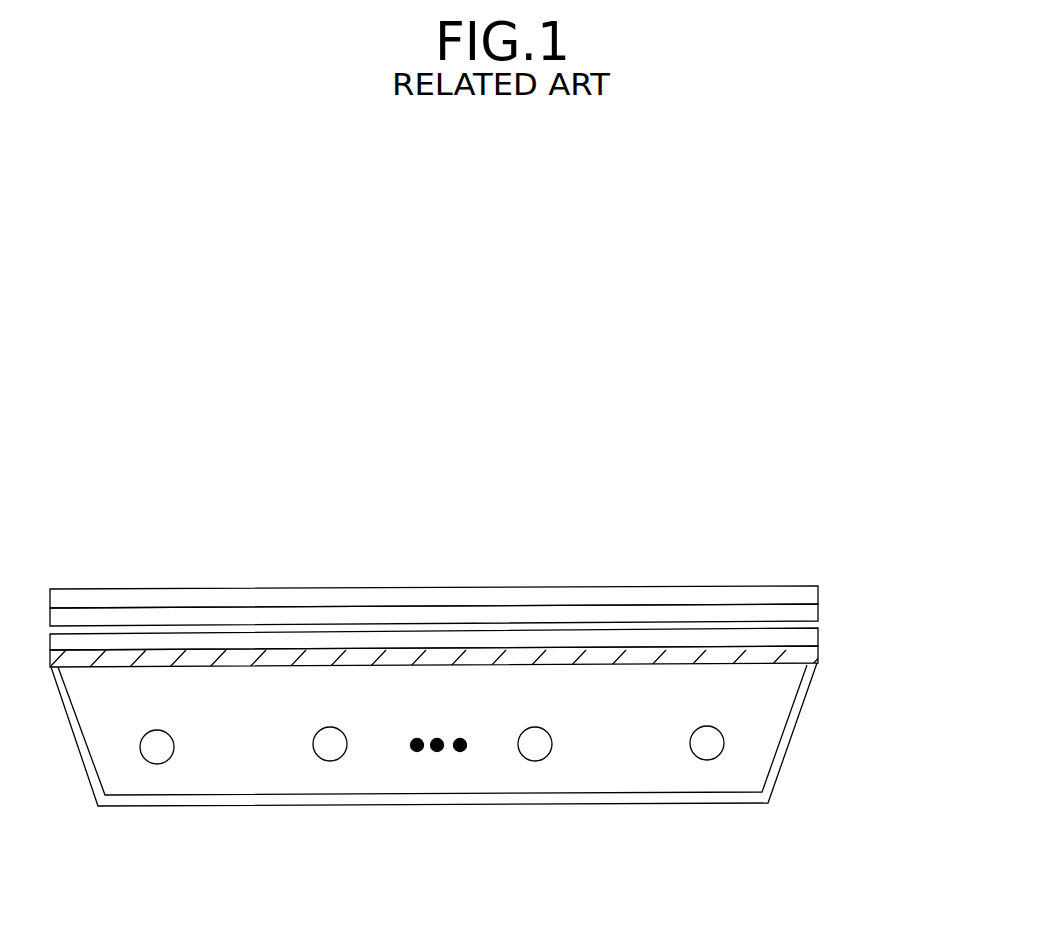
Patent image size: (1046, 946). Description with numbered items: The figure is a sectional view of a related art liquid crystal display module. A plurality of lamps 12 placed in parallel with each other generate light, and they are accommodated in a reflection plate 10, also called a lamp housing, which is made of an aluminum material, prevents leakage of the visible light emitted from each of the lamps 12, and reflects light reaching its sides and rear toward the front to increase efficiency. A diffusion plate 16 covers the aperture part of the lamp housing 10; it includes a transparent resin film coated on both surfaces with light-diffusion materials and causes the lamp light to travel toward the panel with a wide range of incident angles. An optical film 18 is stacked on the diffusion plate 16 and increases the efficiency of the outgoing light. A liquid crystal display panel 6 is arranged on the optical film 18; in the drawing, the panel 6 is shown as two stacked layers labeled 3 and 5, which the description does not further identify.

The upper polarizing plate / first layer of liquid crystal panel 3 is at (603, 598).
The lower layer of liquid crystal panel 5 is at (627, 613).
The liquid crystal display panel 6 is at (434, 543).
The optical film 18 is at (808, 637).
The diffusion plate 16 is at (805, 656).
The lamps 12 is at (718, 745).
The reflection plate 10 is at (722, 803).